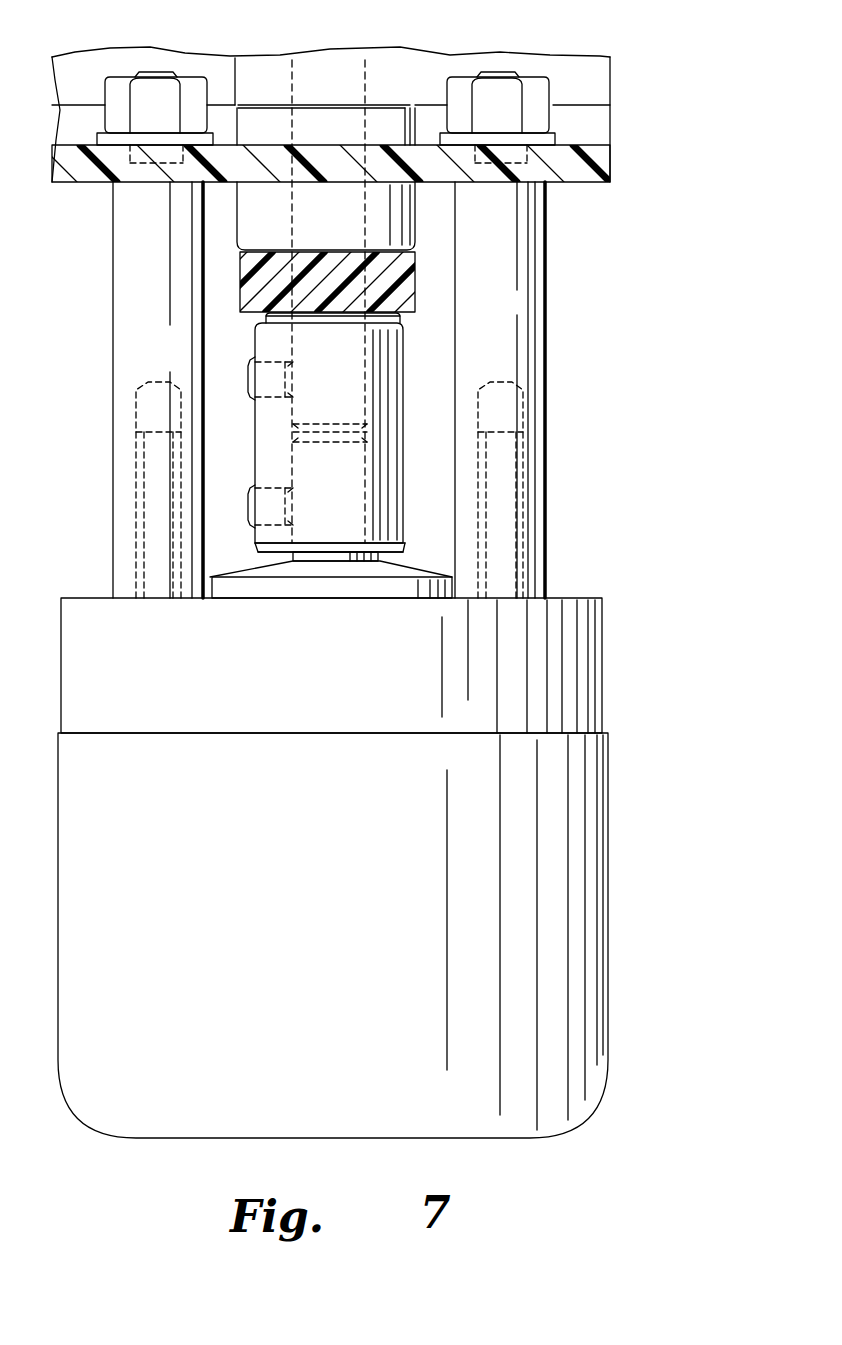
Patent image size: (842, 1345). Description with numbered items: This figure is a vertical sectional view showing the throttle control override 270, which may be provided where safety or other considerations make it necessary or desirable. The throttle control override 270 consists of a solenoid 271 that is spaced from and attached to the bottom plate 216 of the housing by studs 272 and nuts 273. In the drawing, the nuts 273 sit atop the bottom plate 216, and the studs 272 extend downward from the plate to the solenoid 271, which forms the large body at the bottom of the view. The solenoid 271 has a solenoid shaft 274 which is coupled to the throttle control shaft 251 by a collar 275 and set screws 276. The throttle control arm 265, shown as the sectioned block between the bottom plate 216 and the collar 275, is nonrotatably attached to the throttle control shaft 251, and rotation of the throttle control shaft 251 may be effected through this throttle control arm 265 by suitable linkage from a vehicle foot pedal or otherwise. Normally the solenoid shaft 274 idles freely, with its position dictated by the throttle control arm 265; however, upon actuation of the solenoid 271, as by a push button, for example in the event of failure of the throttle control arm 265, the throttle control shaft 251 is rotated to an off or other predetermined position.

The bottom plate 216 is at (585, 163).
The nuts 273 is at (159, 88).
The studs 272 is at (135, 237).
The throttle control arm 265 is at (415, 284).
The throttle control shaft 251 is at (365, 362).
The collar 275 is at (402, 392).
The set screws 276 is at (248, 372).
The solenoid shaft 274 is at (345, 555).
The throttle control override 270 is at (607, 662).
The solenoid 271 is at (580, 883).